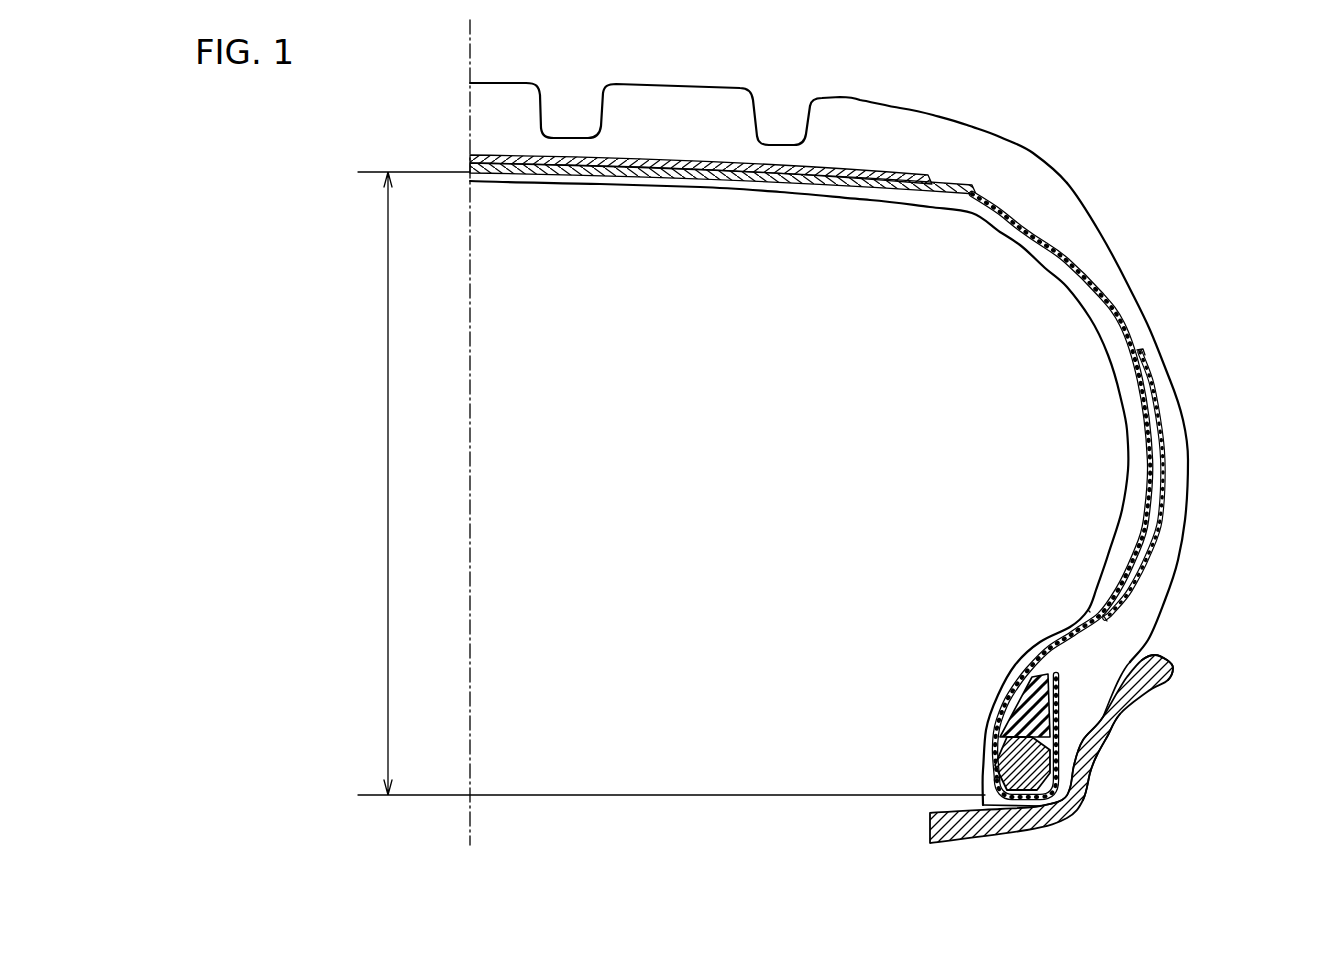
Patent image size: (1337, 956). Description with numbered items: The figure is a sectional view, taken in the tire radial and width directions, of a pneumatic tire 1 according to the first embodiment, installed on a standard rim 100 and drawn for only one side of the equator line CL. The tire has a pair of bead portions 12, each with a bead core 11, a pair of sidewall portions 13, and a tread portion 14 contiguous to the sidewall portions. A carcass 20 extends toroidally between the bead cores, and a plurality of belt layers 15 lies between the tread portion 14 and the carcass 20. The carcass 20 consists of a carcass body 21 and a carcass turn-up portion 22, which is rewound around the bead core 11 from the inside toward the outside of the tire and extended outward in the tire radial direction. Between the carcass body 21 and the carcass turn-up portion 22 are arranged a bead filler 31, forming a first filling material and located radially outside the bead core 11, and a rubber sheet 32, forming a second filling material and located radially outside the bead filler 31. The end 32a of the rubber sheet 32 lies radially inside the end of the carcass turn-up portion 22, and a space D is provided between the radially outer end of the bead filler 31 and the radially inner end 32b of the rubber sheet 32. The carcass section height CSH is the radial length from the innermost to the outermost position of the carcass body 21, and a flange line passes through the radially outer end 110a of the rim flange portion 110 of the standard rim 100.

The pneumatic tire 1 is at (739, 60).
The bead core 11 is at (1000, 775).
The bead portion 12 is at (1085, 700).
The sidewall portion 13 is at (1190, 409).
The tread portion 14 is at (848, 117).
The belt layer 15 is at (980, 184).
The carcass 20 is at (1142, 495).
The carcass body 21 is at (1104, 286).
The carcass turn-up portion 22 is at (1129, 642).
The bead filler 31 is at (1007, 710).
The rubber sheet 32 is at (1164, 386).
The end of the rubber sheet 32a is at (1150, 352).
The end of the rubber sheet inside in the tire radial direction 32b is at (1110, 620).
The standard rim 100 is at (1005, 826).
The rim flange portion 110 is at (1085, 768).
The end of the rim flange portion 110a is at (1166, 667).
The equator line CL is at (472, 478).
The carcass section height CSH is at (654, 483).
The space D is at (1060, 640).